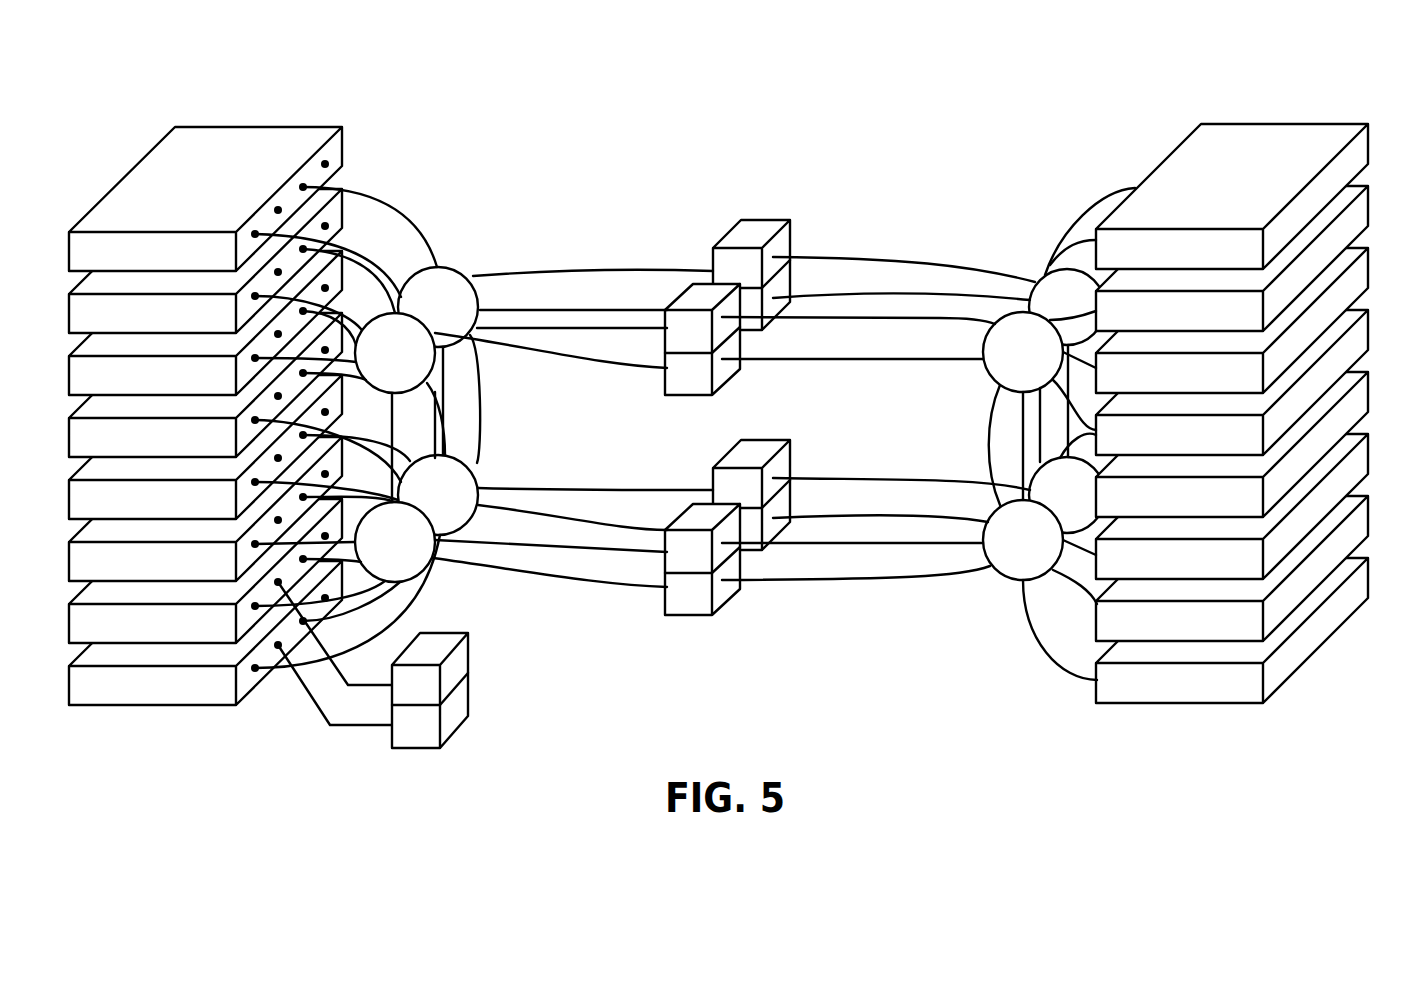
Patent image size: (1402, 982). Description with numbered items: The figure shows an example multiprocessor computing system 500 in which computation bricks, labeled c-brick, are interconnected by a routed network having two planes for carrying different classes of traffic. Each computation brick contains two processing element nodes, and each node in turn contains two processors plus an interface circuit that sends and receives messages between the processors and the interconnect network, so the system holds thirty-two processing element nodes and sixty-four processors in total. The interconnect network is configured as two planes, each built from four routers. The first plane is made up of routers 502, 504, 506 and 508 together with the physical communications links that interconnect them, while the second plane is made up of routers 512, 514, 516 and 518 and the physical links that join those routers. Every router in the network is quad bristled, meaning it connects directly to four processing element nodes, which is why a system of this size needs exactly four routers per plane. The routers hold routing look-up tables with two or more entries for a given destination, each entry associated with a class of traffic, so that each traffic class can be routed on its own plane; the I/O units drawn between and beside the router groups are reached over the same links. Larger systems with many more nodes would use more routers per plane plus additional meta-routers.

The multiprocessor computing system 500 is at (1012, 98).
The router 502 is at (407, 570).
The router 504 is at (1003, 572).
The router 506 is at (420, 362).
The router 508 is at (990, 377).
The router 512 is at (476, 479).
The router 514 is at (1047, 475).
The router 516 is at (456, 272).
The router 518 is at (1043, 272).